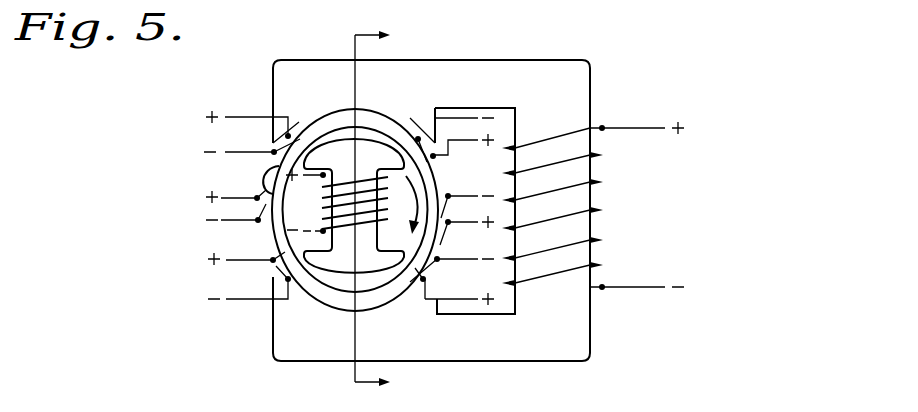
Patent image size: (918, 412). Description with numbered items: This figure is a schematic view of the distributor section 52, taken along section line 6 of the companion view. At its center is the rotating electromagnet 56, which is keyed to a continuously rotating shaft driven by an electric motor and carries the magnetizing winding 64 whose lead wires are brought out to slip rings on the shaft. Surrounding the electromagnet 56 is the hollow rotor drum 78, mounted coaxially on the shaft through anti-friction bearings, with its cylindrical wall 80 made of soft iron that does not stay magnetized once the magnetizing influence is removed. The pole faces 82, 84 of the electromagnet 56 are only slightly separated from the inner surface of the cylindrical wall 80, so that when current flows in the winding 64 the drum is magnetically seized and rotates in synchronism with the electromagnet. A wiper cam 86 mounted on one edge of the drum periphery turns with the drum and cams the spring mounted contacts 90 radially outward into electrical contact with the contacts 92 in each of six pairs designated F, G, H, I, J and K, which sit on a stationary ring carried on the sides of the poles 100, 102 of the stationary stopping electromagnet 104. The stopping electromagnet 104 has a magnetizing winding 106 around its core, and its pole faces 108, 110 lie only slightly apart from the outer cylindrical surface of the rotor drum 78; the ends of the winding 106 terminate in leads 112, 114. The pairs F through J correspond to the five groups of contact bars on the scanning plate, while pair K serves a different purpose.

The section line 6- 6 is at (361, 210).
The distributor section 52 is at (273, 312).
The rotating electromagnet 56 is at (372, 148).
The magnetizing winding 64 is at (340, 187).
The rotor drum 78 is at (393, 288).
The cylindrical wall 80 is at (354, 292).
The pole face 82 is at (345, 273).
The pole face 84 is at (337, 129).
The wiper cam 86 is at (265, 172).
The spring mounted contact 90 is at (273, 152).
The contact 92 is at (287, 135).
The pole 100 is at (300, 53).
The pole 102 is at (293, 352).
The stationary stopping electromagnet 104 is at (560, 350).
The magnetizing winding 106 is at (603, 210).
The pole face 108 is at (368, 108).
The pole face 110 is at (307, 298).
The lead 112 is at (630, 116).
The lead 114 is at (636, 289).